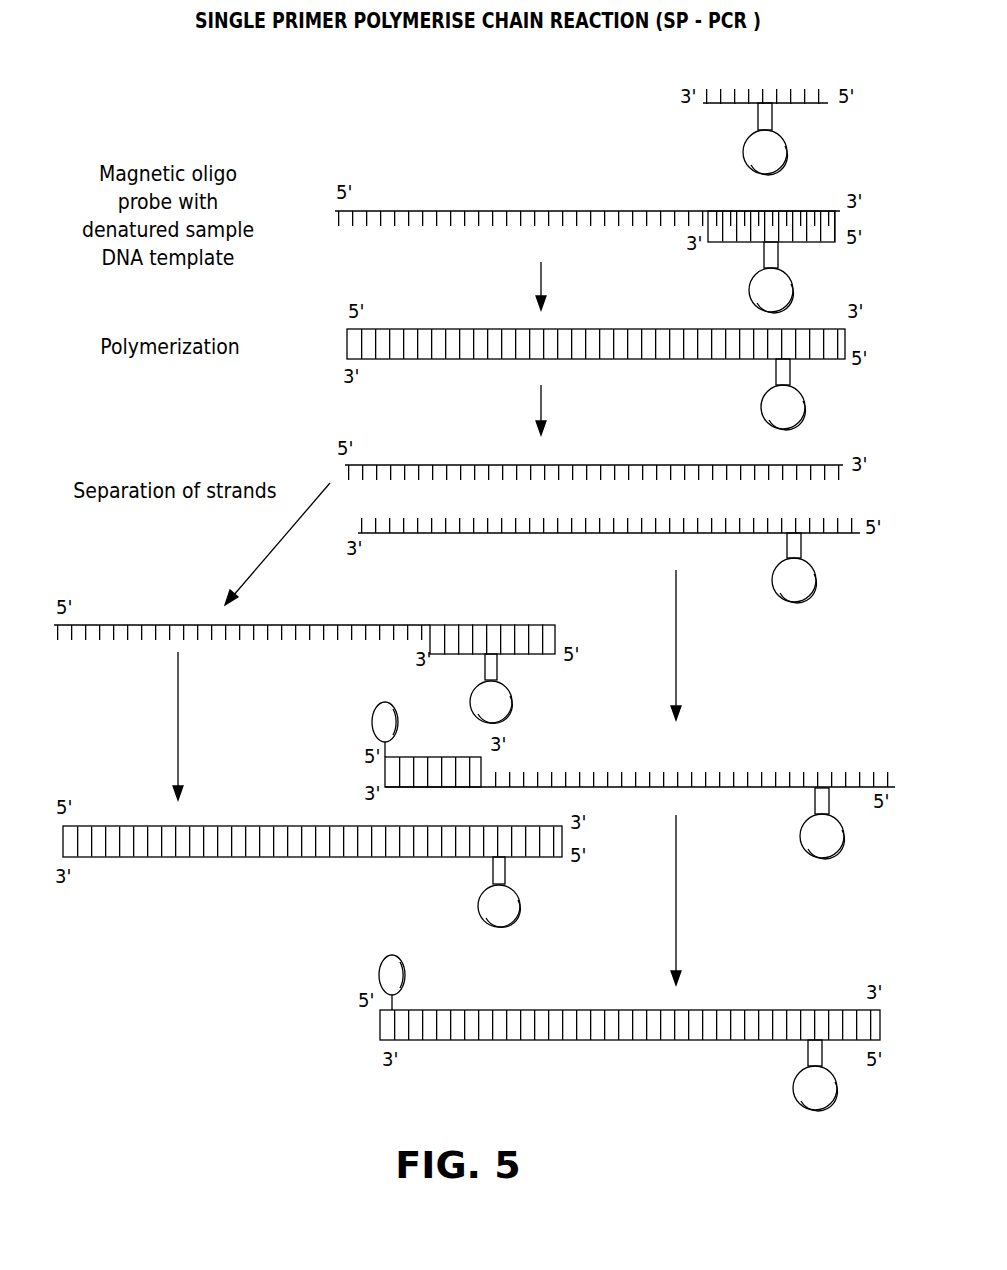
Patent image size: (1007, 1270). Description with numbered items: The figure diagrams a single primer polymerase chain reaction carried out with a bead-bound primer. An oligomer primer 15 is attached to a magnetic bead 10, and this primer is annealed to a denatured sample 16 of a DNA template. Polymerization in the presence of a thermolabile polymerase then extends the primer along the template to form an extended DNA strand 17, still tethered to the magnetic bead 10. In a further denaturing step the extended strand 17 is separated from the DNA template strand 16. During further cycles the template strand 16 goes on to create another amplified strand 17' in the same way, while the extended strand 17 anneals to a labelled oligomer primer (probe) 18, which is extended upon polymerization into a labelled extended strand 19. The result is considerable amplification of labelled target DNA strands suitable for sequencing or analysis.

The magnetic bead 10 is at (770, 148).
The oligomer primer 15 is at (722, 103).
The denatured sample of DNA template 16 is at (487, 211).
The extended DNA strand 17 is at (621, 716).
The amplified strand 17' is at (312, 869).
The labelled oligomer primer (probe) 18 is at (451, 757).
The labelled extended strand 19 is at (553, 1010).